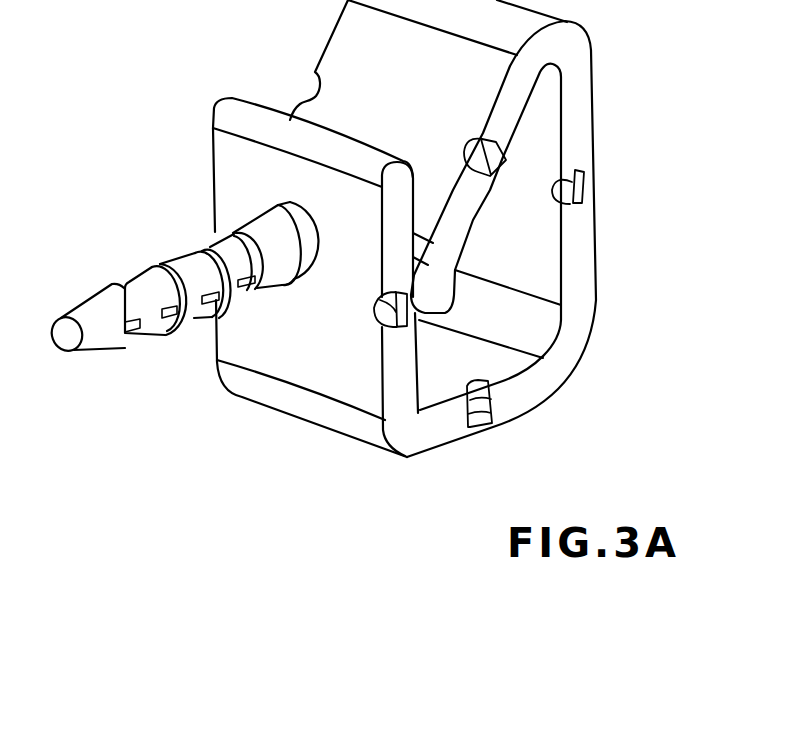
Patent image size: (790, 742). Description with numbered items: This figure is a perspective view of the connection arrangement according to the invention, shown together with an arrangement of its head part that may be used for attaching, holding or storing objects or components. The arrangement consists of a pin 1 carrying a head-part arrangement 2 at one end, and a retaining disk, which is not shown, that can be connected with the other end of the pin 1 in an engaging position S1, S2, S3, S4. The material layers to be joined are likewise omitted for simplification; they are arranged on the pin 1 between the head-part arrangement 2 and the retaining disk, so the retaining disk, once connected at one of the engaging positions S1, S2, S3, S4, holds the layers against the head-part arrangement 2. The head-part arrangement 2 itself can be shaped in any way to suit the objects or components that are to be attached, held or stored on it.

The pin 1 is at (200, 318).
The head-part arrangement 2 is at (403, 458).
The engaging position S1 is at (113, 273).
The engaging position S2 is at (157, 260).
The engaging position S3 is at (193, 242).
The engaging position S4 is at (233, 225).